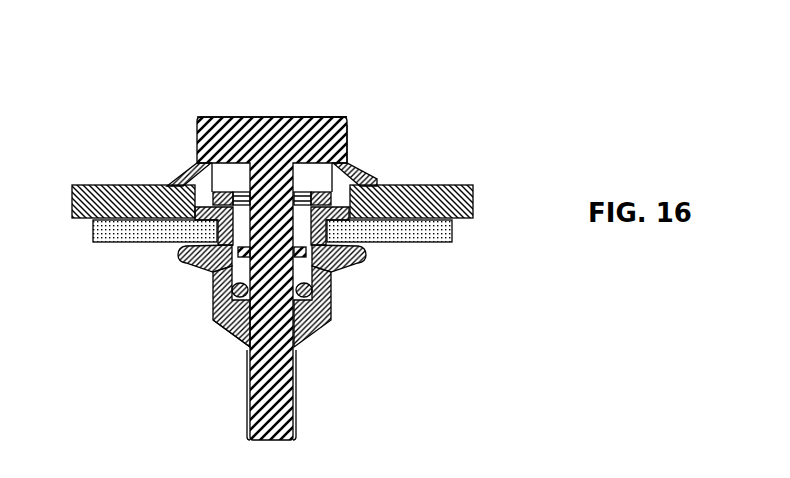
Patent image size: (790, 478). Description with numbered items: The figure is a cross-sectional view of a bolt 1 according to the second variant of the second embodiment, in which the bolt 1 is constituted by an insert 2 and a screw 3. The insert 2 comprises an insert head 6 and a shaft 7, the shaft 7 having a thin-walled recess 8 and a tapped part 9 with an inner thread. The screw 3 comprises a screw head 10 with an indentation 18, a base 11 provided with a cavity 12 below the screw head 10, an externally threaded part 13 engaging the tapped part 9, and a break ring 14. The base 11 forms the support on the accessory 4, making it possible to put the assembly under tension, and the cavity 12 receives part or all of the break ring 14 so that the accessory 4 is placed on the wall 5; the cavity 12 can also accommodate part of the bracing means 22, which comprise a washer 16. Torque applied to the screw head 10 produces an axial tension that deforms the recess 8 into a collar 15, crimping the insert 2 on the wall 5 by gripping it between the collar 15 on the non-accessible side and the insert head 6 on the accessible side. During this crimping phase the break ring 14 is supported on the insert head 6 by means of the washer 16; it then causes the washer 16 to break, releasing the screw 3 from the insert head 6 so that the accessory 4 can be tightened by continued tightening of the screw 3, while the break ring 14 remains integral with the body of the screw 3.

The bolt 1 is at (186, 108).
The insert 2 is at (198, 316).
The screw 3 is at (230, 110).
The accessory 4 is at (95, 190).
The wall 5 is at (95, 232).
The insert head 6 is at (170, 181).
The shaft 7 is at (206, 273).
The recess 8 is at (183, 251).
The tapped part 9 is at (243, 347).
The screw head 10 is at (312, 116).
The base 11 is at (374, 178).
The cavity 12 is at (314, 177).
The threaded part 13 is at (297, 353).
The break ring 14 is at (305, 255).
The collar 15 is at (352, 261).
The washer 16 is at (334, 186).
The indentation 18 is at (348, 130).
The bracing means 22 is at (219, 182).